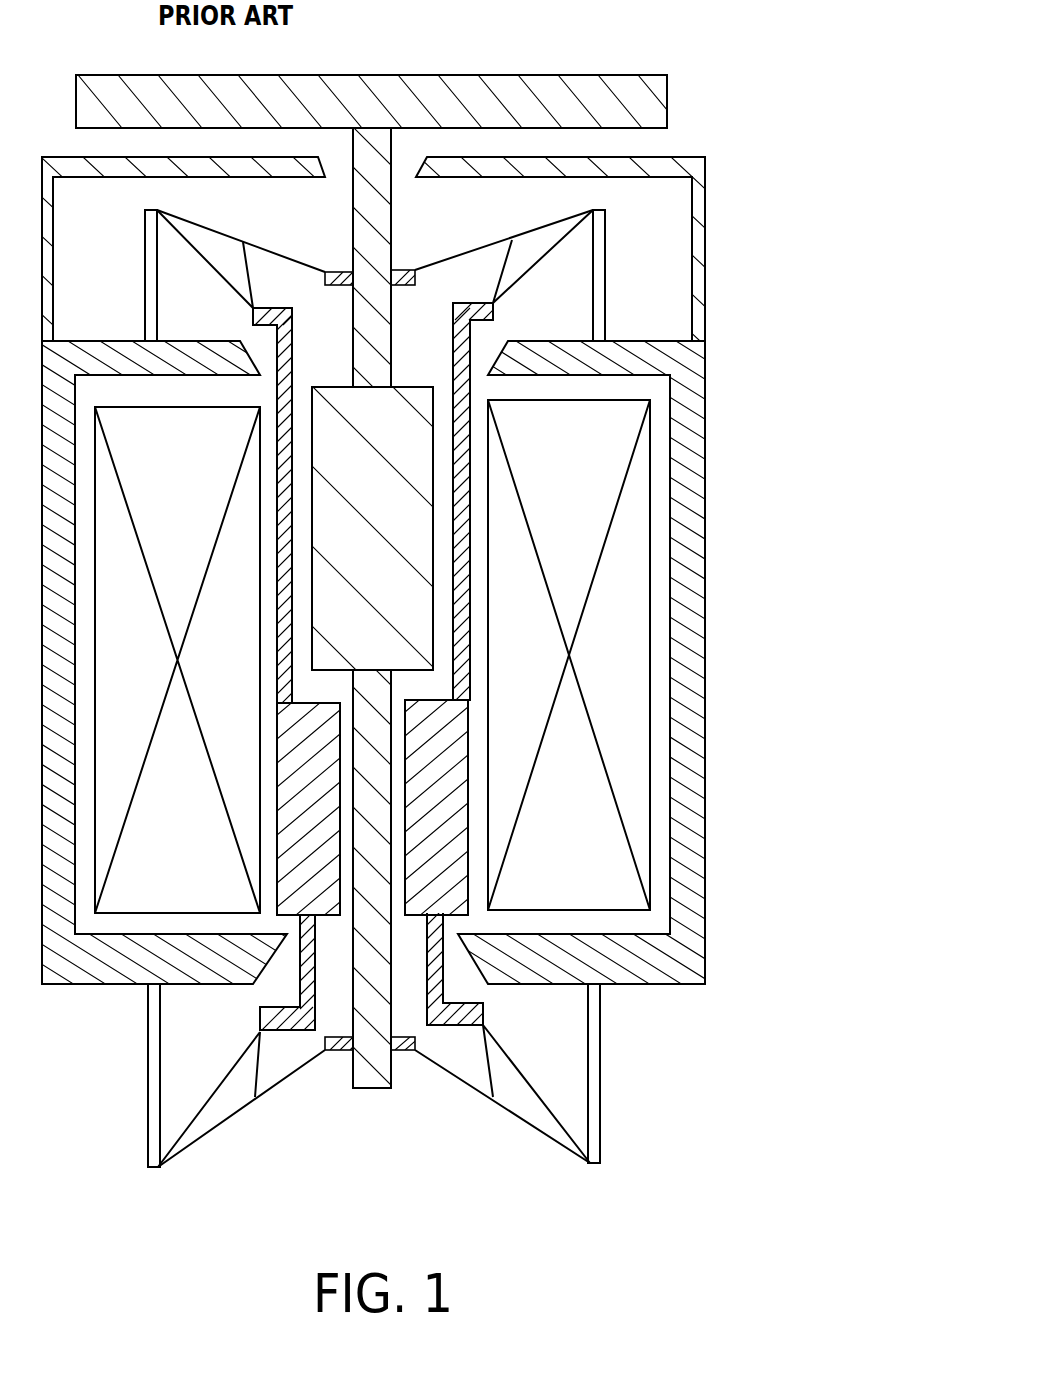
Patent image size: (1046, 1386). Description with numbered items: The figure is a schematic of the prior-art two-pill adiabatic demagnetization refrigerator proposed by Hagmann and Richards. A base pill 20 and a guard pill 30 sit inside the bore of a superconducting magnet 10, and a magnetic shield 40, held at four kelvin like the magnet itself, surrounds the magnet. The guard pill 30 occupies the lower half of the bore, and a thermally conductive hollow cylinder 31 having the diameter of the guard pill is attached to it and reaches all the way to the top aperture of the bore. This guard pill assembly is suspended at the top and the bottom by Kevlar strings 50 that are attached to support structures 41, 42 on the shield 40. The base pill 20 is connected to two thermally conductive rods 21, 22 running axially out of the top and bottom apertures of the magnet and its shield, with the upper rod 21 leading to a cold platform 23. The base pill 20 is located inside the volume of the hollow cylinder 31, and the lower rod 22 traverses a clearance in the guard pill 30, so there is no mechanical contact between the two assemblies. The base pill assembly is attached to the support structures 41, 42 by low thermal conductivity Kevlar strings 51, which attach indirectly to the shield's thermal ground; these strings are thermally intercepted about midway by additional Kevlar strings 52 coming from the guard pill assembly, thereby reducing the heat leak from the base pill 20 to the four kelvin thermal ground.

The superconducting magnet 10 is at (585, 468).
The base pill 20 is at (389, 511).
The thermally conductive rod 21 is at (396, 230).
The lower rod 22 is at (343, 1086).
The cold platform 23 is at (577, 87).
The guard pill 30 is at (468, 807).
The thermally conductive hollow cylinder 31 is at (470, 549).
The magnetic shield 40 is at (703, 968).
The support structure 41 is at (607, 273).
The support structure 42 is at (602, 1088).
The Kevlar strings 50 is at (510, 290).
The Kevlar strings 51 is at (527, 230).
The Kevlar strings 52 is at (253, 293).